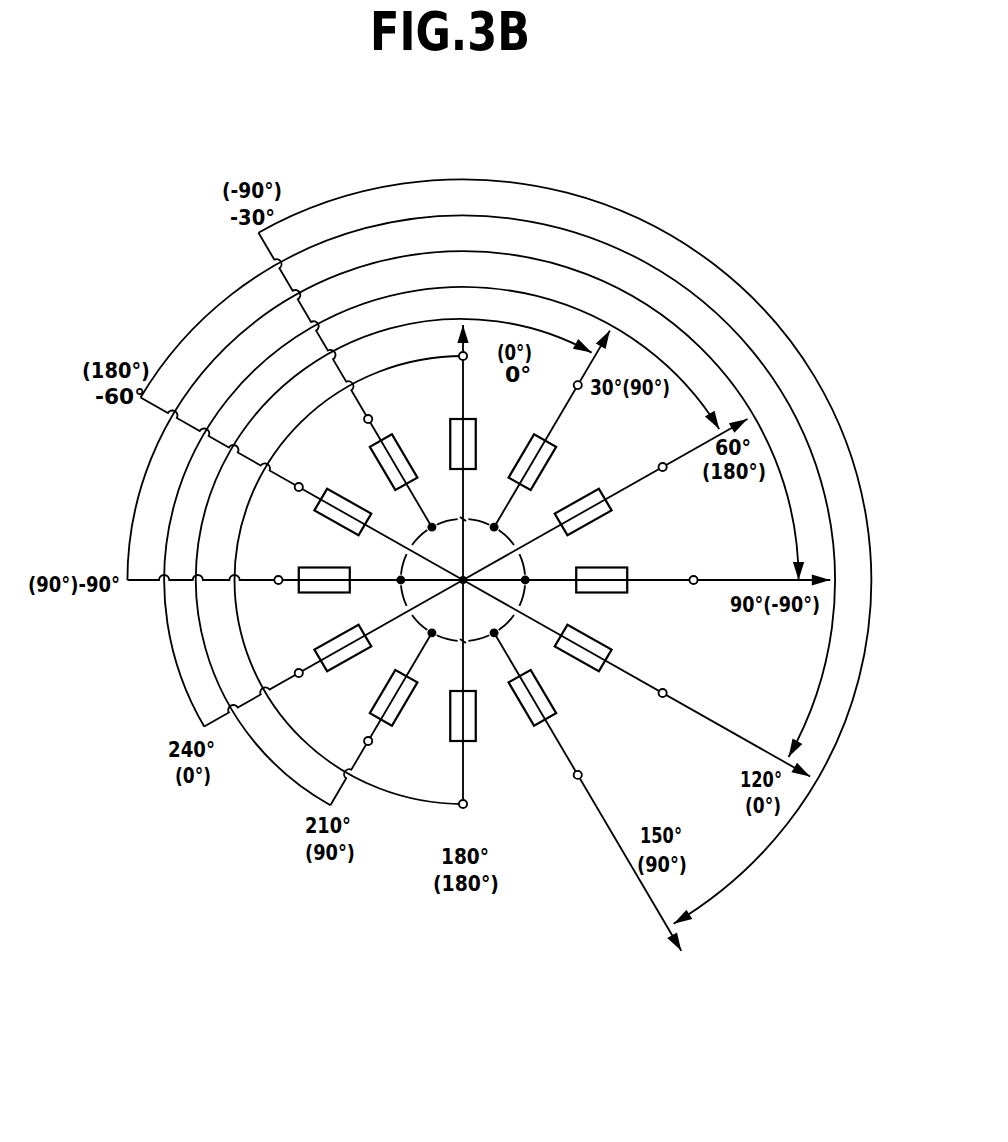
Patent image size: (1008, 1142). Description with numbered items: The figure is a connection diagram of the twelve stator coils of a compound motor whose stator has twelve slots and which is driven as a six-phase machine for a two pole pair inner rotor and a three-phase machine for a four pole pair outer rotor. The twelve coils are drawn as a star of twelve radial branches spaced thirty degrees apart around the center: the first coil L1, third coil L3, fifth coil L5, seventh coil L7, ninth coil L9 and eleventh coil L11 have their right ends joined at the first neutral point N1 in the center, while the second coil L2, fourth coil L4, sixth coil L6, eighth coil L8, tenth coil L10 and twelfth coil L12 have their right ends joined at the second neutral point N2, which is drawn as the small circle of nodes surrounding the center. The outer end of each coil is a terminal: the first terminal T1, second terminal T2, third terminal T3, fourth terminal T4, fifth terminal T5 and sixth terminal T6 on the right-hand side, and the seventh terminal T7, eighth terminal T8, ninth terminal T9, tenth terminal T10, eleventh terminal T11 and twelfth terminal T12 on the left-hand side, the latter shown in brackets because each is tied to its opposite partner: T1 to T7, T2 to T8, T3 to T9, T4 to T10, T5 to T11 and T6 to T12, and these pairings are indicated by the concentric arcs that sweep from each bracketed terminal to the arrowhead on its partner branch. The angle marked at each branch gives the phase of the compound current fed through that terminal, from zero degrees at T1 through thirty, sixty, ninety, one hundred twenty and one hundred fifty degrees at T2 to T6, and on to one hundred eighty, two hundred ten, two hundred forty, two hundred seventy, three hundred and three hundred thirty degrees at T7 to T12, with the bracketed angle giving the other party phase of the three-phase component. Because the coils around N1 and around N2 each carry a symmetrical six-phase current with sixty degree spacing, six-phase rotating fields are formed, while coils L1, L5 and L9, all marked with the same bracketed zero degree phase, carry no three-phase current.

The first neutral point N1 is at (466, 578).
The second neutral point N2 is at (497, 527).
The first coil L1 is at (477, 444).
The second coil L2 is at (544, 464).
The third coil L3 is at (586, 522).
The fourth coil L4 is at (601, 597).
The fifth coil L5 is at (583, 661).
The sixth coil L6 is at (529, 707).
The seventh coil L7 is at (451, 722).
The eighth coil L8 is at (384, 698).
The ninth coil L9 is at (340, 646).
The tenth coil L10 is at (324, 569).
The eleventh coil L11 is at (342, 506).
The twelfth coil L12 is at (404, 461).
The first terminal T1 is at (478, 367).
The second terminal T2 is at (591, 400).
The third terminal T3 is at (669, 483).
The fourth terminal T4 is at (692, 597).
The fifth terminal T5 is at (657, 707).
The sixth terminal T6 is at (567, 785).
The seventh terminal T7 is at (464, 822).
The eighth terminal T8 is at (347, 745).
The ninth terminal T9 is at (285, 665).
The tenth terminal T10 is at (270, 570).
The eleventh terminal T11 is at (309, 475).
The twelfth terminal T12 is at (394, 414).